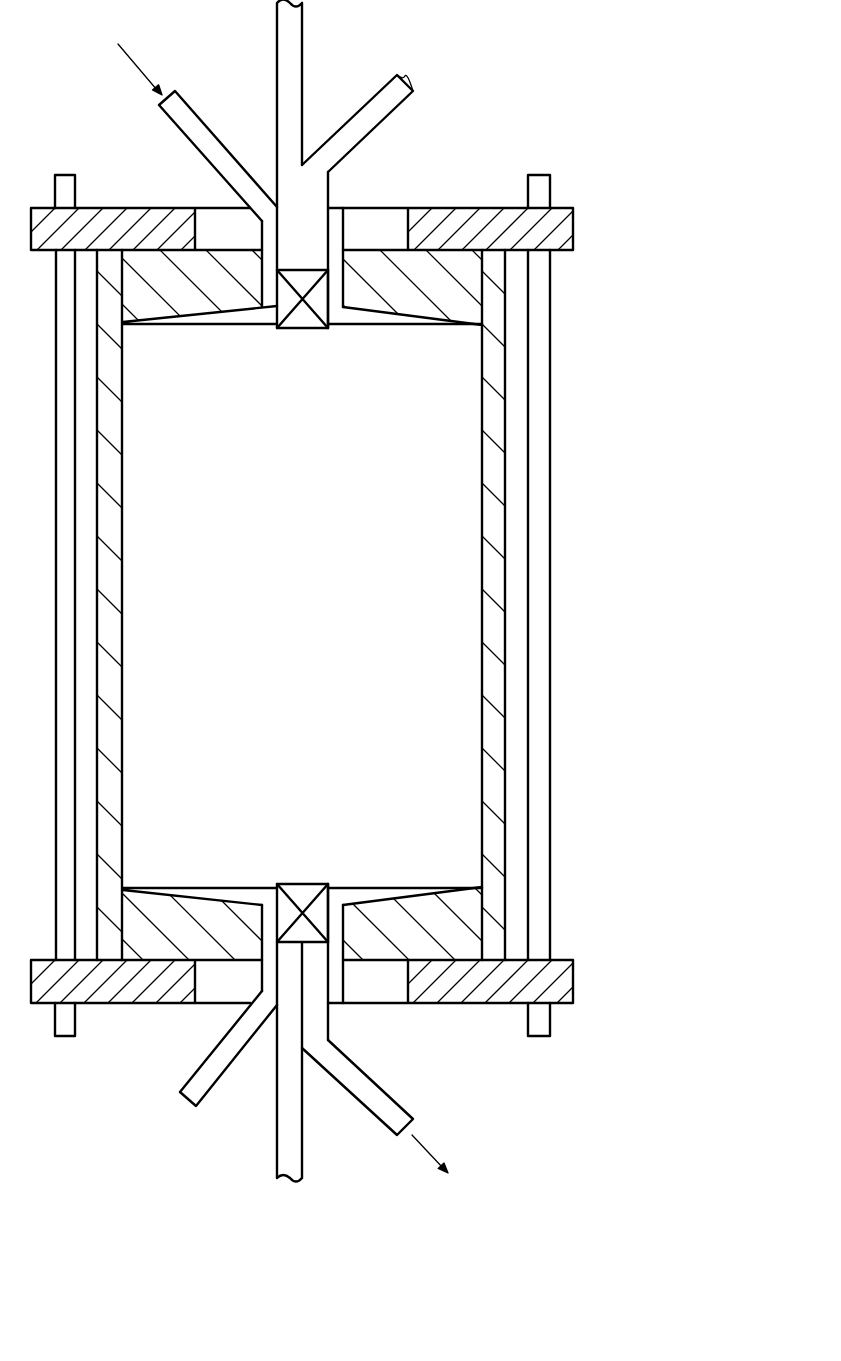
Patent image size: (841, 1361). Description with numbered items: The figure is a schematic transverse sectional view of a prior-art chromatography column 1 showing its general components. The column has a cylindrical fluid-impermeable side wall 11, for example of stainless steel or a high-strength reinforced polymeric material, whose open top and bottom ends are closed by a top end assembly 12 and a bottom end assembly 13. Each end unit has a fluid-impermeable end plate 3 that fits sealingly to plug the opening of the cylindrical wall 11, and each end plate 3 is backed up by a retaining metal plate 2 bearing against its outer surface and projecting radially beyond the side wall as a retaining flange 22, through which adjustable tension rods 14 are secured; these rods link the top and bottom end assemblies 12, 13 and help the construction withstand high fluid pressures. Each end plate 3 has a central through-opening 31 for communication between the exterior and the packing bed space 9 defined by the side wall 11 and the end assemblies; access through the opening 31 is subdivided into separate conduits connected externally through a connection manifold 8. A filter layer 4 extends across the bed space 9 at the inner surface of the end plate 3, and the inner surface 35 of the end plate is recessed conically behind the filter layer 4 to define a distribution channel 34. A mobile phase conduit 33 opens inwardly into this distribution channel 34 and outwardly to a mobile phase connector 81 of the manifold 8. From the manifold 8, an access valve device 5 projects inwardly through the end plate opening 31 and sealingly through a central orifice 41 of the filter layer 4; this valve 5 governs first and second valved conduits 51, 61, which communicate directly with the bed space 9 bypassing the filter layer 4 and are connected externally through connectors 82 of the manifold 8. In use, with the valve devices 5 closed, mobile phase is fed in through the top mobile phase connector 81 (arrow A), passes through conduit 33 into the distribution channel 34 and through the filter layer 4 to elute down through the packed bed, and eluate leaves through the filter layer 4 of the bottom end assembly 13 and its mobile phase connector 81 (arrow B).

The chromatography column 1 is at (630, 531).
The retaining metal plate 2 is at (442, 213).
The end plate 3 is at (462, 283).
The filter layer 4 is at (212, 328).
The access valve device 5 is at (290, 328).
The connection manifold 8 is at (372, 170).
The packing bed space 9 is at (300, 598).
The side wall 11 is at (505, 490).
The top end assembly 12 is at (600, 257).
The bottom end assembly 13 is at (600, 928).
The tension rod 14 is at (551, 396).
The retaining flange 22 is at (574, 212).
The central through-opening 31 is at (344, 232).
The mobile phase conduit 33 is at (268, 243).
The distribution channel 34 is at (363, 322).
The inner surface 35 is at (413, 322).
The central orifice 41 is at (332, 333).
The first valved conduit 51 is at (313, 997).
The second valved conduit 61 is at (285, 975).
The mobile phase connector 81 is at (193, 108).
The connector 82 is at (378, 88).